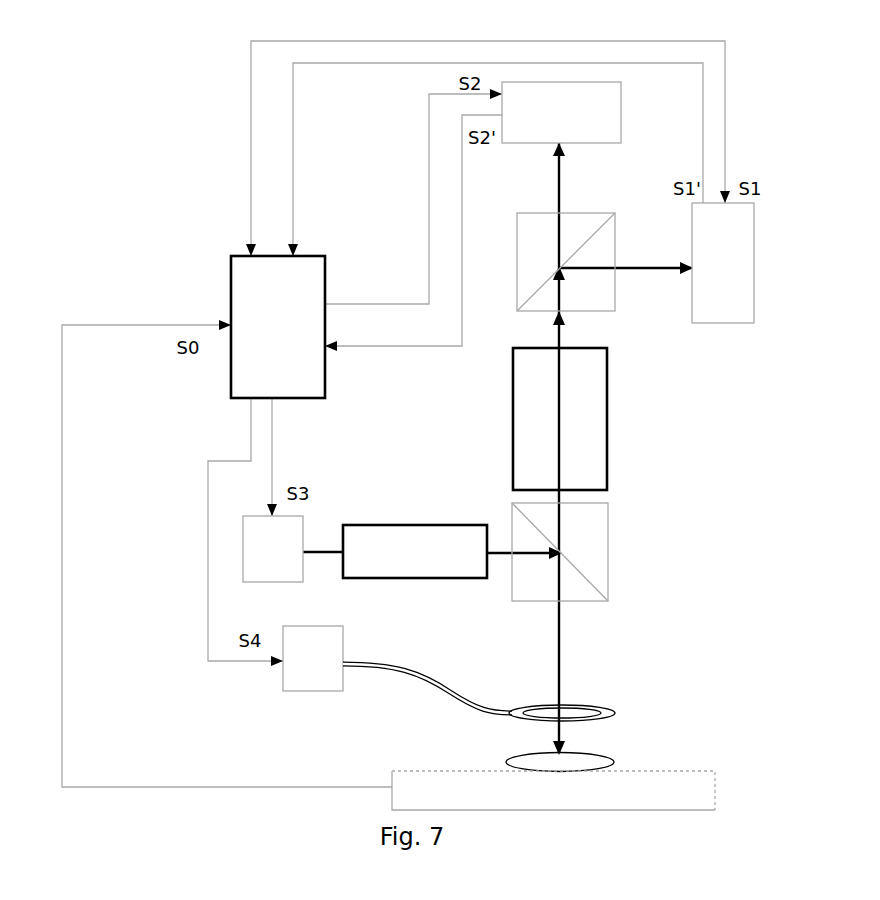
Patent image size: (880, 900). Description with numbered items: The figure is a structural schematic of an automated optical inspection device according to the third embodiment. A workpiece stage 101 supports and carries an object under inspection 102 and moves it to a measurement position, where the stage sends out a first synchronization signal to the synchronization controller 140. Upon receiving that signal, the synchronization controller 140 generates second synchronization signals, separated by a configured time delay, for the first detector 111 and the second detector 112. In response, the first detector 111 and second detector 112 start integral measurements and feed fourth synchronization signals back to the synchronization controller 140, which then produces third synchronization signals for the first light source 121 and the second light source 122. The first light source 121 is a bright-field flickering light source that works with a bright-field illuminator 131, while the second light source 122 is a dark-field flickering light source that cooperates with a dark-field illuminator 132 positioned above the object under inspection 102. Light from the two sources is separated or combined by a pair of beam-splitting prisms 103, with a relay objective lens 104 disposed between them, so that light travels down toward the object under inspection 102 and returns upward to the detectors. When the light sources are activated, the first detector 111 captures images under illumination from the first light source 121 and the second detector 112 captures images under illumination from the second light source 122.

The workpiece stage 101 is at (576, 784).
The object under inspection 102 is at (613, 762).
The beam-splitting prism 103 is at (580, 407).
The relay objective lens 104 is at (560, 419).
The first detector 111 is at (723, 263).
The second detector 112 is at (561, 112).
The first light source 121 is at (273, 549).
The second light source 122 is at (313, 658).
The bright-field illuminator 131 is at (415, 551).
The dark-field illuminator 132 is at (479, 692).
The synchronization controller 140 is at (278, 327).